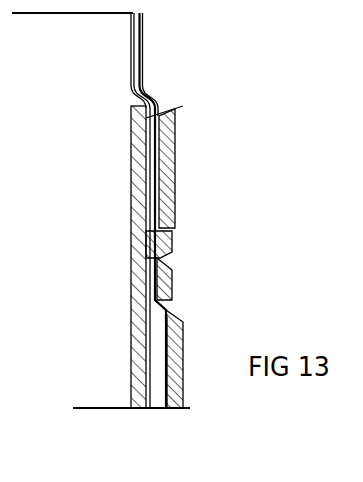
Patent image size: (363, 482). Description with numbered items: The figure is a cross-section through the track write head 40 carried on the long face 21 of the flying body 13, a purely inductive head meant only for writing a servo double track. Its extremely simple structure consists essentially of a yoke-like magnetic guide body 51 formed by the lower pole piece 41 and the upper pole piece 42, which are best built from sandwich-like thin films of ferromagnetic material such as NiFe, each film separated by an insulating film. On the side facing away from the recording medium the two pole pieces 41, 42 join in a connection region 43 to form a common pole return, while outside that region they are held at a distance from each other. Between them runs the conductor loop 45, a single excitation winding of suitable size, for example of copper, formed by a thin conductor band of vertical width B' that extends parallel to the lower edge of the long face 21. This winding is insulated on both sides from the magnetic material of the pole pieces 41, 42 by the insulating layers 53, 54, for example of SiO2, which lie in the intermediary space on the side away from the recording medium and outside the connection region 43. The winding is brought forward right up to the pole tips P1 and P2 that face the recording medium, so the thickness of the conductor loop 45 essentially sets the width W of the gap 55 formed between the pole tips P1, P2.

The flying body 13 is at (97, 27).
The long face 21 is at (133, 94).
The track write head 40 is at (178, 290).
The lower pole piece 41 is at (134, 173).
The upper pole piece 42 is at (176, 150).
The connection region 43 is at (174, 243).
The conductor loop 45 is at (162, 334).
The magnetic guide body 51 is at (177, 109).
The insulating layer 53 is at (132, 53).
The insulating layer 54 is at (140, 67).
The gap 55 is at (150, 410).
The pole tip P1 is at (136, 410).
The pole tip P2 is at (184, 410).
The gap width W is at (205, 436).
The vertical width of conductor band B' is at (123, 369).